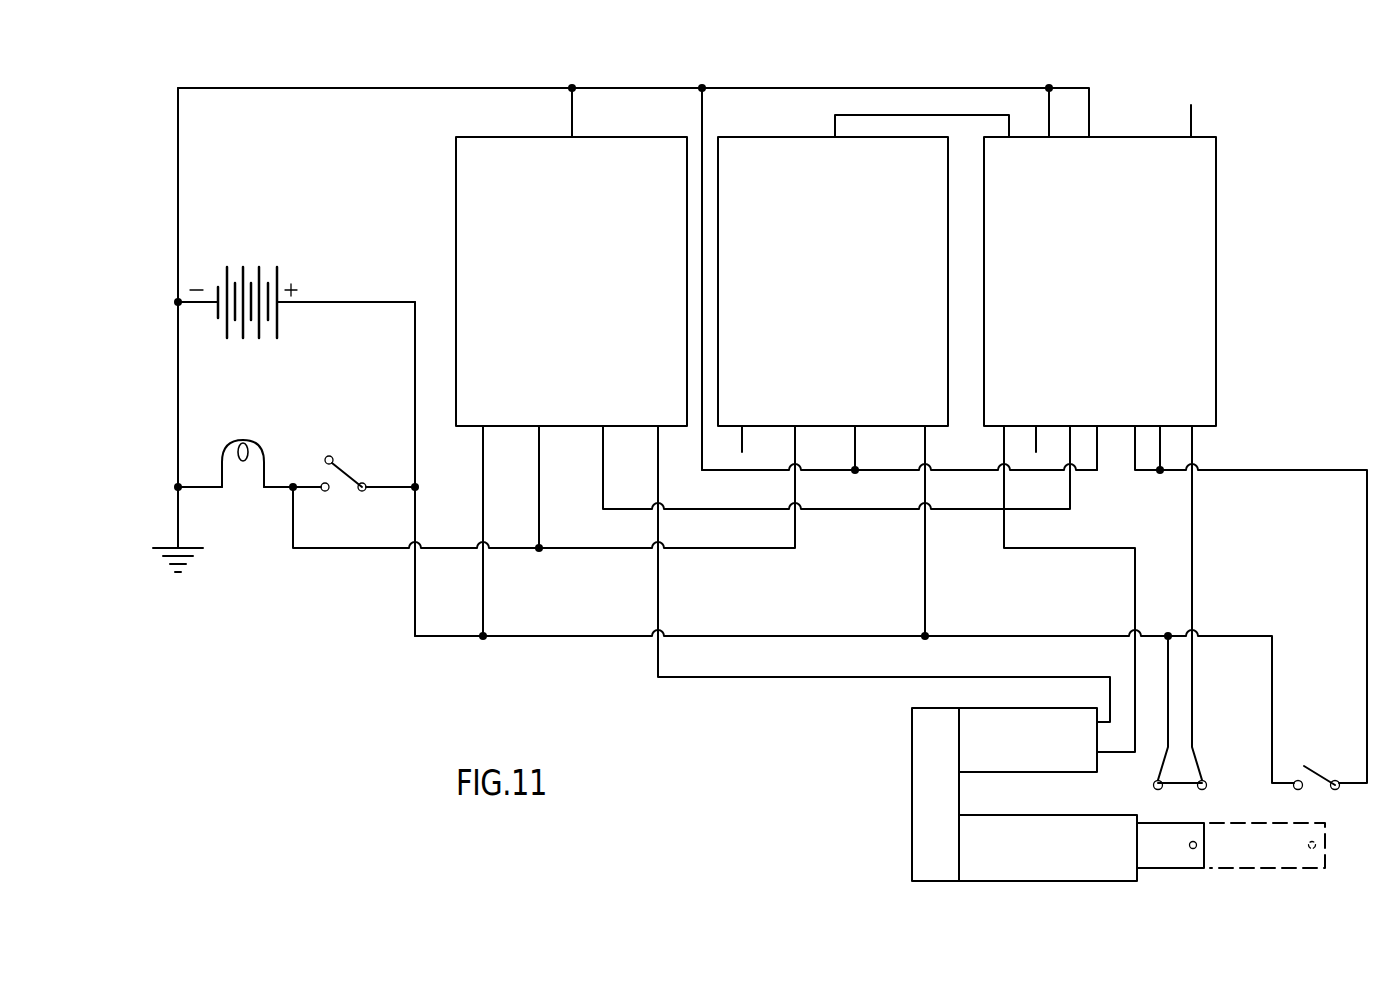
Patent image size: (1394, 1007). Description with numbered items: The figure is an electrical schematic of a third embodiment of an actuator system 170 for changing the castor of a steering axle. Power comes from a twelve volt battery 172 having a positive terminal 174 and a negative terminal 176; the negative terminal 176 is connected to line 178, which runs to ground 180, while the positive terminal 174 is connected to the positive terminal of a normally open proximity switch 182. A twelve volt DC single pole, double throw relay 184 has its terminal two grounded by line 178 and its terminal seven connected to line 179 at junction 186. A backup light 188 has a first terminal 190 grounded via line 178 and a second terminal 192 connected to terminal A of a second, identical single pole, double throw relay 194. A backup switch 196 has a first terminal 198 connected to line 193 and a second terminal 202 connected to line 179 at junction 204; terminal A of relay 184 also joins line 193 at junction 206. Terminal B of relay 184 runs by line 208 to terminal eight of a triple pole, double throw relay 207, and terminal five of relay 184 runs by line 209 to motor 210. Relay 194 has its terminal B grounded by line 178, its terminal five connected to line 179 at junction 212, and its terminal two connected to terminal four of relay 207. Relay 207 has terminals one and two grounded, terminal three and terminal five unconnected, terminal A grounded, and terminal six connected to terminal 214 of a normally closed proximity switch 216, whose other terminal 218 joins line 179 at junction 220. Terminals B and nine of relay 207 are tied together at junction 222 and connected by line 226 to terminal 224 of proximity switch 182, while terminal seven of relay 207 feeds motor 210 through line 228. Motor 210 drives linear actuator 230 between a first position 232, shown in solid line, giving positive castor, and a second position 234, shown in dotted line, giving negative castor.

The actuator system 170 is at (352, 600).
The battery 172 is at (293, 238).
The positive terminal 174 is at (277, 302).
The negative terminal 176 is at (212, 302).
The line 178 is at (178, 265).
The line 179 is at (428, 636).
The ground 180 is at (170, 548).
The normally open proximity switch 182 is at (1322, 794).
The single pole, double throw relay 184 is at (470, 228).
The junction 186 is at (483, 636).
The backup light 188 is at (240, 495).
The first terminal 190 is at (214, 487).
The second terminal 192 is at (262, 490).
The line 193 is at (328, 550).
The single pole, double throw relay 194 is at (778, 155).
The backup switch 196 is at (356, 465).
The first terminal 198 is at (325, 493).
The second terminal 202 is at (332, 454).
The junction 204 is at (415, 487).
The junction 206 is at (539, 548).
The triple pole, double throw relay 207 is at (1200, 340).
The line 208 is at (603, 480).
The line 209 is at (706, 678).
The motor 210 is at (980, 710).
The junction 212 is at (925, 636).
The terminal 214 is at (1206, 790).
The normally closed proximity switch 216 is at (1141, 779).
The terminal 218 is at (1155, 789).
The junction 220 is at (1168, 634).
The junction 222 is at (1160, 476).
The terminal 224 is at (1340, 780).
The line 226 is at (1367, 485).
The line 228 is at (1036, 550).
The linear actuator 230 is at (1018, 792).
The first position 232 is at (1163, 858).
The second position 234 is at (1238, 858).